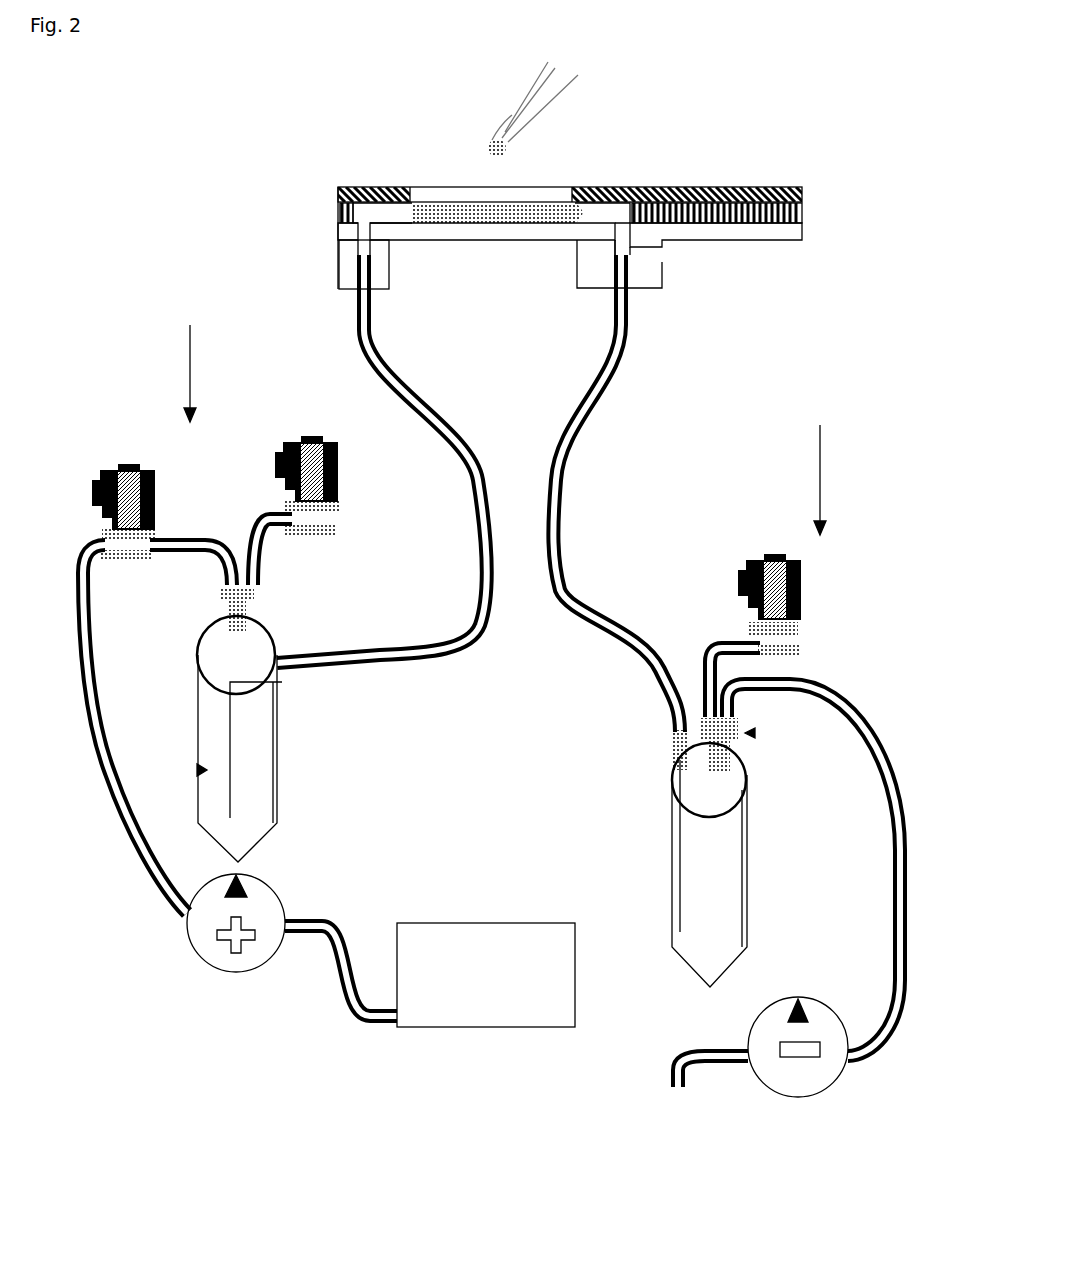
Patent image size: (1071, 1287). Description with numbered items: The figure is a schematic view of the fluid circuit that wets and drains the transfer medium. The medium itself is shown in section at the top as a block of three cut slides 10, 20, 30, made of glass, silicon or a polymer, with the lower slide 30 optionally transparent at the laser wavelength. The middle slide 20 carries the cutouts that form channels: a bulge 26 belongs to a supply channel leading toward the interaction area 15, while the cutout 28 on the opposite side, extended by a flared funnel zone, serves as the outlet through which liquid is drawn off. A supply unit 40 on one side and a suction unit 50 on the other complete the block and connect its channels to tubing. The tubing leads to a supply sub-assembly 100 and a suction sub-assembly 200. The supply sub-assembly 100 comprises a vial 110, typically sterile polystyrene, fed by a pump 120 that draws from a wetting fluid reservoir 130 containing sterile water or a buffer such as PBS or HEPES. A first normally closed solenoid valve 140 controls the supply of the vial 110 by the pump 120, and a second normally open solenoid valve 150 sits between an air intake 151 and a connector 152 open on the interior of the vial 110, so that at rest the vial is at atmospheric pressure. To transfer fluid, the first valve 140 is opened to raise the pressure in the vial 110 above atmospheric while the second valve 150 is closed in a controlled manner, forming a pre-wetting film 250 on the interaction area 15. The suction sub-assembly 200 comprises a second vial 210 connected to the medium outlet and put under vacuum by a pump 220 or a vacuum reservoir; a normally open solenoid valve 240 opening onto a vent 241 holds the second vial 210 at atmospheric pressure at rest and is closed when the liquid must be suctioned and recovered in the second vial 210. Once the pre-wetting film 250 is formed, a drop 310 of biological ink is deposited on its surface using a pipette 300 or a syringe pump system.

The cut slide 10 is at (803, 190).
The interaction area 15 is at (497, 233).
The cut slide 20 is at (805, 210).
The circular bulge 26 is at (403, 215).
The cutout 28 is at (597, 213).
The lower slide 30 is at (802, 232).
The supply unit 40 is at (343, 285).
The suction unit 50 is at (580, 283).
The supply sub-assembly 100 is at (191, 359).
The vial 110 is at (267, 740).
The pump 120 is at (277, 908).
The wetting fluid reservoir 130 is at (463, 953).
The first normally closed solenoid valve 140 is at (97, 477).
The second normally open solenoid valve 150 is at (288, 440).
The air intake 151 is at (333, 517).
The connector 152 is at (257, 604).
The suction sub-assembly 200 is at (819, 466).
The second vial 210 is at (665, 855).
The pump 220 is at (797, 1085).
The normally open solenoid valve 240 is at (740, 560).
The vent 241 is at (800, 640).
The pre-wetting film 250 is at (493, 212).
The pipette 300 is at (533, 98).
The drop 310 is at (488, 143).